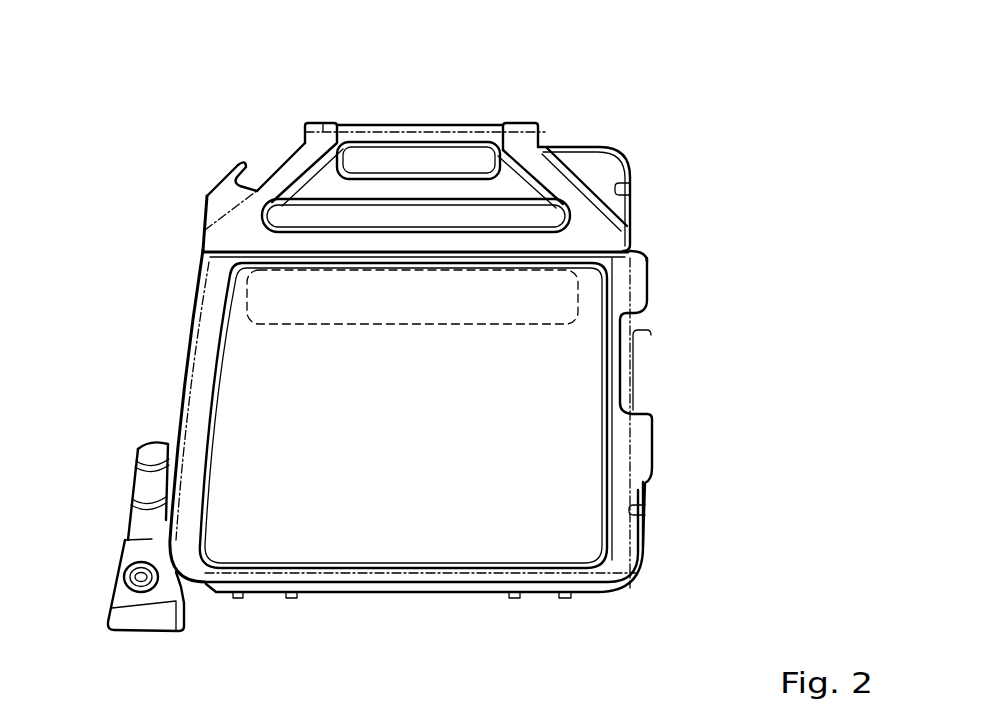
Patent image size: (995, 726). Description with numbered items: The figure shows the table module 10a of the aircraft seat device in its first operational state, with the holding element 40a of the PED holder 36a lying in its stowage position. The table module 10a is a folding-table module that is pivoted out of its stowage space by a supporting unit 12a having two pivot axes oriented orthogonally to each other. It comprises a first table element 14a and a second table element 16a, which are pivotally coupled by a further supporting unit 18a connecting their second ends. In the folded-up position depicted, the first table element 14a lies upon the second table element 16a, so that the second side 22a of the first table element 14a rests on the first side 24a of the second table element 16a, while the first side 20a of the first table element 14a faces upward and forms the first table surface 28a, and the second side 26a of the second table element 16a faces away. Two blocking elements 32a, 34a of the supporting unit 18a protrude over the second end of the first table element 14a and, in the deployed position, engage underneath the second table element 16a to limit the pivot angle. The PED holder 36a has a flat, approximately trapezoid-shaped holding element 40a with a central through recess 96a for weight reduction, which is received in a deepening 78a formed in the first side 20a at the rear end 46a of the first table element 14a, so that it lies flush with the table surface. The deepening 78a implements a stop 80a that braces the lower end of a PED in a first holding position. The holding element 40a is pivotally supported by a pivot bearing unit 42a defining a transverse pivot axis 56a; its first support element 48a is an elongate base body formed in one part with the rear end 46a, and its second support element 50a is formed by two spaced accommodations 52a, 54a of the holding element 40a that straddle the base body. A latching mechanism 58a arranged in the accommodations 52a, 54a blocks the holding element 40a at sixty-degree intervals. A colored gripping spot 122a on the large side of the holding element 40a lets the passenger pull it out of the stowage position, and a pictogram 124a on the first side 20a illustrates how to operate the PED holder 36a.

The table module 10a is at (677, 249).
The supporting unit 12a is at (128, 637).
The first table element 14a is at (210, 314).
The second table element 16a is at (453, 578).
The supporting unit 18a is at (648, 572).
The first side of the first table element 20a is at (457, 384).
The second side of the first table element 22a is at (374, 600).
The first side of the second table element 24a is at (240, 568).
The second side of the second table element 26a is at (310, 600).
The first table surface 28a is at (640, 438).
The blocking element 32a is at (644, 467).
The blocking element 34a is at (636, 305).
The PED holder 36a is at (194, 224).
The holding element 40a is at (592, 230).
The pivot bearing unit 42a is at (294, 132).
The rear end of the first table element 46a is at (580, 142).
The first support element 48a is at (397, 126).
The second support element 50a is at (311, 119).
The accommodation 52a is at (327, 128).
The accommodation 54a is at (515, 127).
The pivot axis 56a is at (450, 127).
The latching mechanism 58a is at (543, 113).
The deepening 78a is at (597, 178).
The stop 80a is at (230, 173).
The through recess 96a is at (293, 180).
The gripping spot 122a is at (220, 212).
The pictogram 124a is at (580, 290).